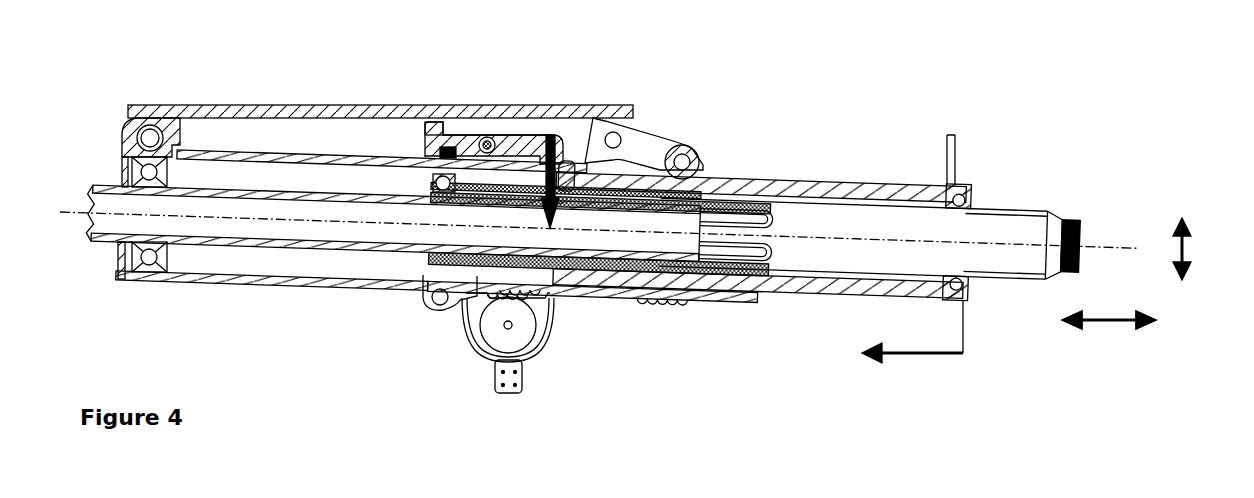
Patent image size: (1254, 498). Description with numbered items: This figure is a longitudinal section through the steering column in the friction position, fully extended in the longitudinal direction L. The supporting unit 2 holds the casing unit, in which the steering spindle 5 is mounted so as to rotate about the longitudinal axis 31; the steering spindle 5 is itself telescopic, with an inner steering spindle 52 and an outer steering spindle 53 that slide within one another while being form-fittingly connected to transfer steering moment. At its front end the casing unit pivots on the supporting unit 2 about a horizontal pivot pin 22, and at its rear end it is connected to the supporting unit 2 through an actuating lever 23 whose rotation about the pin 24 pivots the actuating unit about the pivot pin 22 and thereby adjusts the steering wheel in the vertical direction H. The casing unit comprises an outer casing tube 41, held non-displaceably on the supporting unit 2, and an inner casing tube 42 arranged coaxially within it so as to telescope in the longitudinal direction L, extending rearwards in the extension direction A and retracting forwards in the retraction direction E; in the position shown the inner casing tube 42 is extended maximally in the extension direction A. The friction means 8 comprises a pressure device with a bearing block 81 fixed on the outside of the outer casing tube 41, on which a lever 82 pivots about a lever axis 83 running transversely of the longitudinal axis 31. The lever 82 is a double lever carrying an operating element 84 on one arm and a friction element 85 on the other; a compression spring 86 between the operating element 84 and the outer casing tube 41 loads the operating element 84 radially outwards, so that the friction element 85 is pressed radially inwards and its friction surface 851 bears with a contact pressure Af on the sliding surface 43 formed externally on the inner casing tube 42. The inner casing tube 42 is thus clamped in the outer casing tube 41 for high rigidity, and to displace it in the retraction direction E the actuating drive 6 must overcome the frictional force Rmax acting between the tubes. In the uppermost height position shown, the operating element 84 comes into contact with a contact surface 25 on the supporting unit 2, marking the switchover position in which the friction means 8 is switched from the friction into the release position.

The supporting unit 2 is at (308, 108).
The steering spindle 5 is at (1003, 210).
The actuating drive 6 is at (558, 352).
The friction means 8 is at (478, 125).
The pivot pin 22 is at (149, 137).
The actuating lever 23 is at (660, 140).
The pin 24 is at (614, 140).
The contact surface 25 is at (428, 122).
The longitudinal axis 31 is at (1134, 249).
The outer casing tube 41 is at (260, 153).
The inner casing tube 42 is at (834, 187).
The sliding surface 43 is at (580, 245).
The inner steering spindle 52 is at (302, 243).
The outer steering spindle 53 is at (840, 290).
The bearing block 81 is at (445, 195).
The lever 82 is at (510, 150).
The lever axis 83 is at (487, 137).
The operating element 84 is at (446, 135).
The friction element 85 is at (549, 135).
The spring 86 is at (437, 150).
The friction surface 851 is at (566, 160).
The contact pressure Af is at (535, 222).
The vertical direction H is at (1189, 252).
The retraction direction E is at (1068, 333).
The longitudinal direction L is at (1112, 327).
The extension direction A is at (1142, 328).
The frictional force Rmax is at (904, 376).